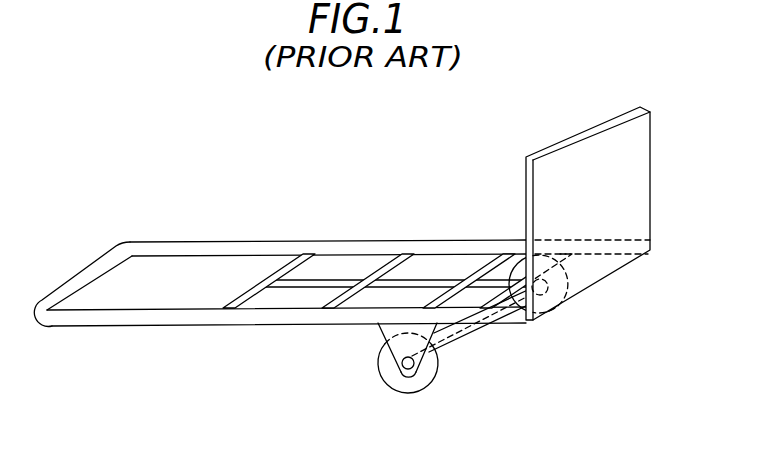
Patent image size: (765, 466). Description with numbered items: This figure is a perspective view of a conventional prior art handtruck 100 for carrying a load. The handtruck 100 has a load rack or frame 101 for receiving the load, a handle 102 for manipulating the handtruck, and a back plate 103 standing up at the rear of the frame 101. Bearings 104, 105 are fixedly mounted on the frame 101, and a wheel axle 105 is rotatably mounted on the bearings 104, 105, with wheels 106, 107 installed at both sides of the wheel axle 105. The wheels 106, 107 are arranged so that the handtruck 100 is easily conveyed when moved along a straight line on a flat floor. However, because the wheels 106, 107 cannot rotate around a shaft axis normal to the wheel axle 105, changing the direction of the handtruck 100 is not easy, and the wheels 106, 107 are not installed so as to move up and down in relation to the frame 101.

The handtruck 100 is at (197, 200).
The load rack or frame 101 is at (177, 323).
The handle 102 is at (92, 268).
The back plate 103 is at (579, 146).
The bearing 104 is at (563, 256).
The wheel axle 105 is at (468, 334).
The wheel 106 is at (413, 388).
The wheel 107 is at (562, 292).